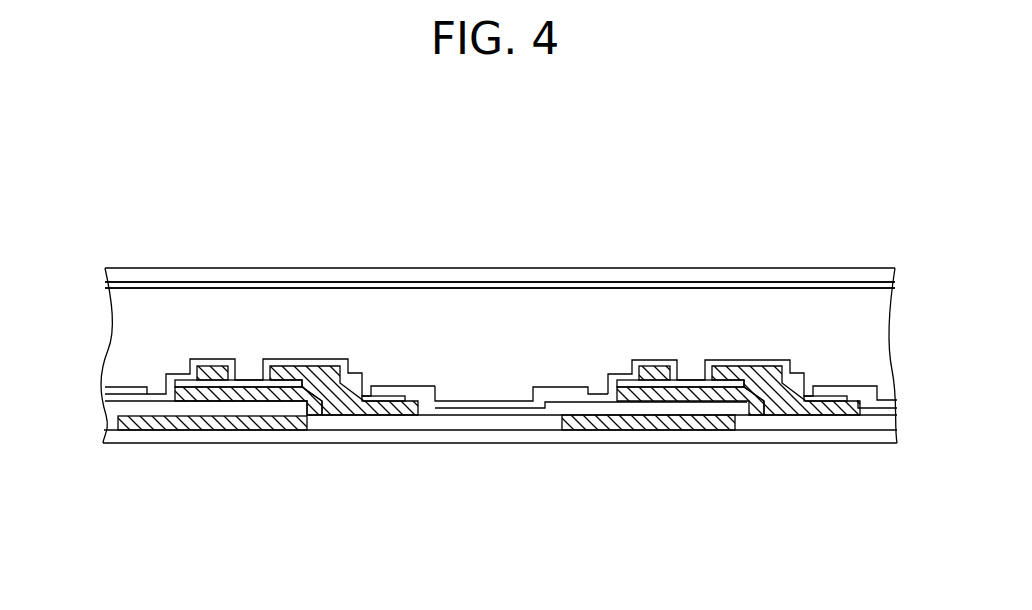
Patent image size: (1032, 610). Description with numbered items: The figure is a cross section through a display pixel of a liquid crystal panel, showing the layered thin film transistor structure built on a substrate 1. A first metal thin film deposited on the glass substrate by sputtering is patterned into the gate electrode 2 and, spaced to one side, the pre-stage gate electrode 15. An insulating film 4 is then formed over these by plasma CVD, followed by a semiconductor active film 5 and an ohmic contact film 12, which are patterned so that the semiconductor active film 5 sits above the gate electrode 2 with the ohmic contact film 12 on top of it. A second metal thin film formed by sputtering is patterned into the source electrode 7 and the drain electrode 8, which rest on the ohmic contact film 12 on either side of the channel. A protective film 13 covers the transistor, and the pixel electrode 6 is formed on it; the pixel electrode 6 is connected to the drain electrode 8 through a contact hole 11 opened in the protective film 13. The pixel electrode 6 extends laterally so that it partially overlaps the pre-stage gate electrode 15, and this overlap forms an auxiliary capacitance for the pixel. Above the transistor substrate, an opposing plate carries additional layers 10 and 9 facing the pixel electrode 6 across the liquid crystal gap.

The substrate 1 is at (452, 278).
The gate electrode 2 is at (205, 422).
The insulating film 4 is at (805, 424).
The semiconductor active film 5 is at (255, 402).
The pixel electrode 6 is at (512, 400).
The source electrode 7 is at (215, 372).
The drain electrode 8 is at (308, 372).
The counter electrode 9 is at (727, 315).
The color filter layer 10 is at (663, 284).
The contact hole 11 is at (395, 386).
The ohmic contact film 12 is at (183, 382).
The protective film 13 is at (775, 368).
The pre-stage gate electrode 15 is at (650, 422).